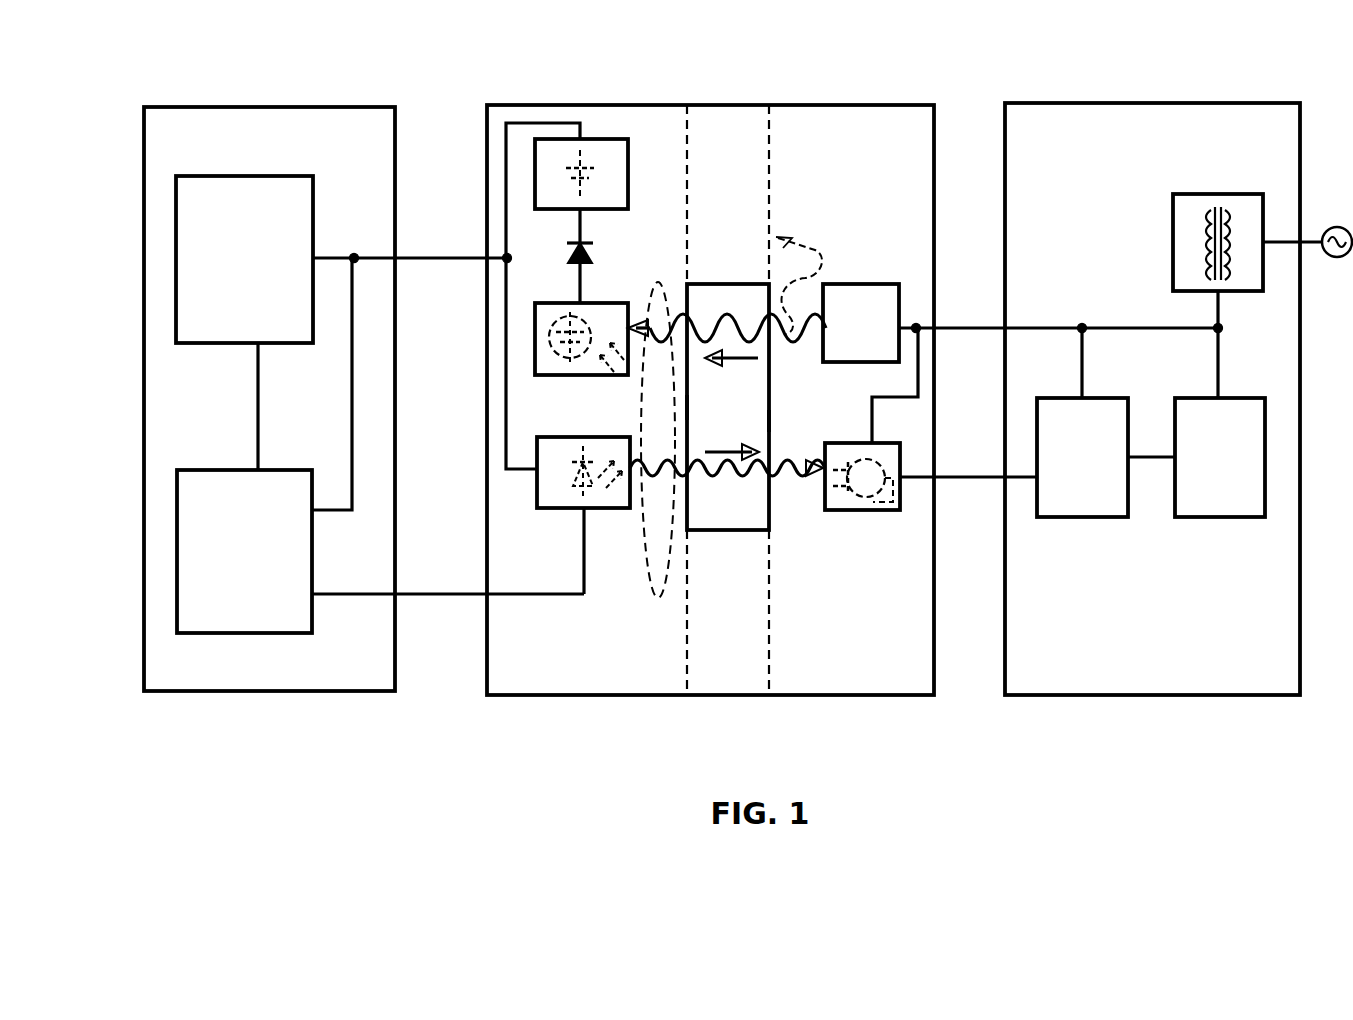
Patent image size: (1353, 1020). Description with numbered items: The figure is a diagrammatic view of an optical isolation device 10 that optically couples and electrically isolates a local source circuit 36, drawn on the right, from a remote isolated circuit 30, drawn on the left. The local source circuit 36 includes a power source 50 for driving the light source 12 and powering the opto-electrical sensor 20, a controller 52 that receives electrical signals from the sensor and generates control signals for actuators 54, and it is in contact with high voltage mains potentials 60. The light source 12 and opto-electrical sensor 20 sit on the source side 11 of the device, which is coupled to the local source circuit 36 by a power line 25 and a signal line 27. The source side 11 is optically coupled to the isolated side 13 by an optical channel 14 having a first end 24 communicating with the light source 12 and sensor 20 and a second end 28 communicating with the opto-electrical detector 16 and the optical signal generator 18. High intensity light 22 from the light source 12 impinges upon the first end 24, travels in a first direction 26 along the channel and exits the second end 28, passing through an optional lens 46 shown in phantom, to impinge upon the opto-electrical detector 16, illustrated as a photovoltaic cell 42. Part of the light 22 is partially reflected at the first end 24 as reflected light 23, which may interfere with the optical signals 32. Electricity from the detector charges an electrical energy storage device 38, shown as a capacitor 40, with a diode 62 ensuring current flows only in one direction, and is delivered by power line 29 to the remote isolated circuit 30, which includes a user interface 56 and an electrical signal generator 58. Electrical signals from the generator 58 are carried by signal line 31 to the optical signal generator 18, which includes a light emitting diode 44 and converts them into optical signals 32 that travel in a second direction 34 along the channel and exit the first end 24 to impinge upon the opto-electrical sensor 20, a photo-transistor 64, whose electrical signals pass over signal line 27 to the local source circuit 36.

The optical isolation device 10 is at (762, 78).
The source side 11 is at (837, 667).
The light source 12 is at (870, 284).
The isolated side 13 is at (612, 665).
The optical channel 14 is at (713, 283).
The opto-electrical detector 16 is at (602, 302).
The optical signal generator 18 is at (604, 510).
The opto-electrical sensor 20 is at (845, 510).
The light 22 is at (808, 342).
The reflected light 23 is at (815, 250).
The first end 24 is at (769, 421).
The power line 25 is at (974, 326).
The first direction 26 is at (740, 360).
The signal line 27 is at (963, 480).
The second end 28 is at (687, 407).
The power line 29 is at (437, 254).
The remote isolated circuit 30 is at (262, 75).
The signal line 31 is at (432, 596).
The optical signals 32 is at (713, 478).
The second direction 34 is at (727, 446).
The local source circuit 36 is at (1192, 75).
The electrical energy storage device 38 is at (628, 182).
The capacitor 40 is at (595, 163).
The photovoltaic cell 42 is at (563, 318).
The light emitting diode 44 is at (580, 474).
The lens 46 is at (663, 453).
The power source 50 is at (1173, 225).
The controller 52 is at (1087, 518).
The actuators 54 is at (1225, 518).
The user interface 56 is at (232, 176).
The electrical signal generator 58 is at (238, 633).
The mains potentials 60 is at (1335, 258).
The diode 62 is at (590, 258).
The photo-transistor 64 is at (873, 458).